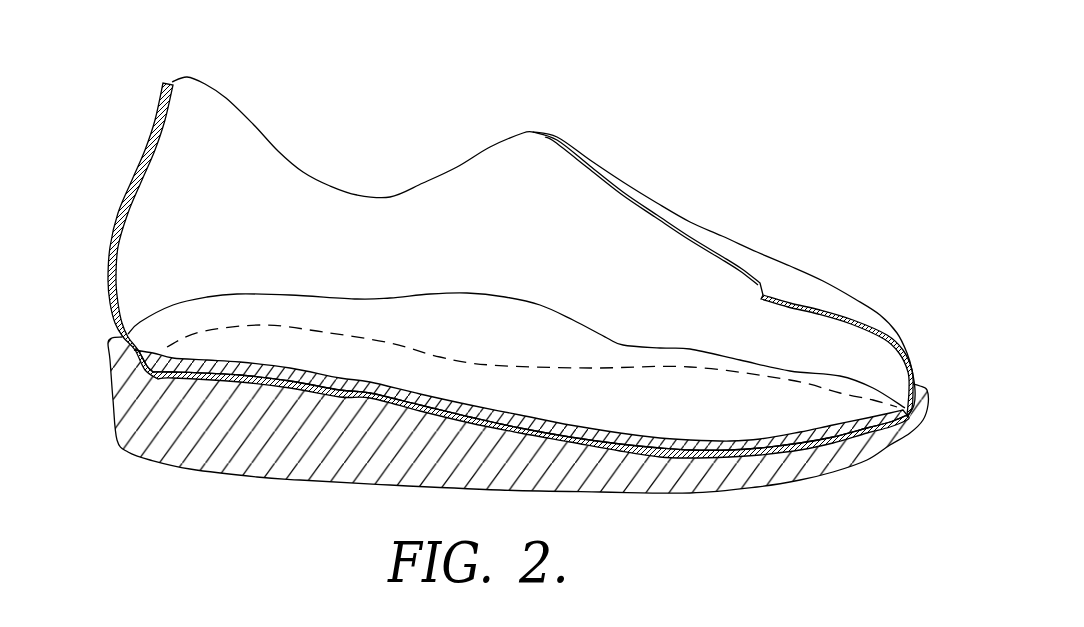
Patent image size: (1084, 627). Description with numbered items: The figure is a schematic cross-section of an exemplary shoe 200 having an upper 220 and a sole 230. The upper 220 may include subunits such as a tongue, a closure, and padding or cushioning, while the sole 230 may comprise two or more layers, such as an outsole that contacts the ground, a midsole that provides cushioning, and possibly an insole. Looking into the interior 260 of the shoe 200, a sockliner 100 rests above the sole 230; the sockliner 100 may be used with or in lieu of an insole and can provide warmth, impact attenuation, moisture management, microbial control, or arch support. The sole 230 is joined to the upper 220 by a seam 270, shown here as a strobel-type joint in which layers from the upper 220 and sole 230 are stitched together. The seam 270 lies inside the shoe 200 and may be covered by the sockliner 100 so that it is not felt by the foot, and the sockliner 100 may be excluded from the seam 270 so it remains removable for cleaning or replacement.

The shoe 200 is at (682, 94).
The upper 220 is at (720, 232).
The sole 230 is at (271, 478).
The interior 260 is at (372, 225).
The sockliner 100 is at (673, 387).
The seam 270 is at (849, 380).